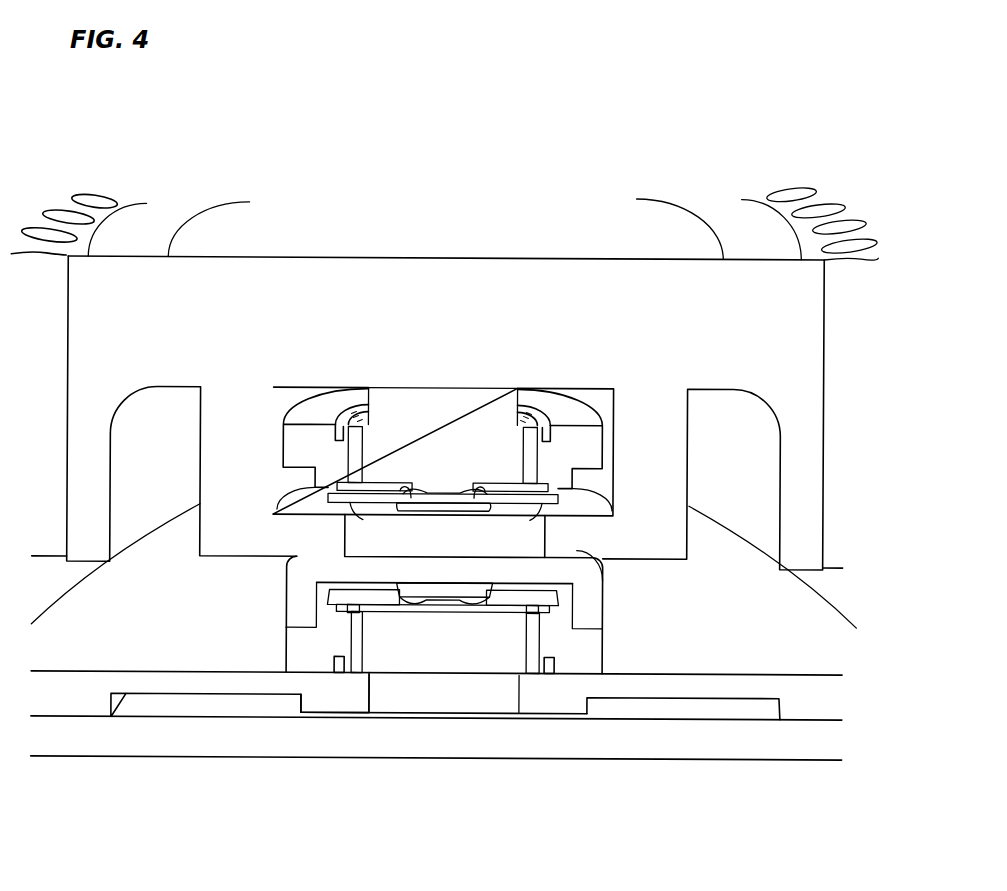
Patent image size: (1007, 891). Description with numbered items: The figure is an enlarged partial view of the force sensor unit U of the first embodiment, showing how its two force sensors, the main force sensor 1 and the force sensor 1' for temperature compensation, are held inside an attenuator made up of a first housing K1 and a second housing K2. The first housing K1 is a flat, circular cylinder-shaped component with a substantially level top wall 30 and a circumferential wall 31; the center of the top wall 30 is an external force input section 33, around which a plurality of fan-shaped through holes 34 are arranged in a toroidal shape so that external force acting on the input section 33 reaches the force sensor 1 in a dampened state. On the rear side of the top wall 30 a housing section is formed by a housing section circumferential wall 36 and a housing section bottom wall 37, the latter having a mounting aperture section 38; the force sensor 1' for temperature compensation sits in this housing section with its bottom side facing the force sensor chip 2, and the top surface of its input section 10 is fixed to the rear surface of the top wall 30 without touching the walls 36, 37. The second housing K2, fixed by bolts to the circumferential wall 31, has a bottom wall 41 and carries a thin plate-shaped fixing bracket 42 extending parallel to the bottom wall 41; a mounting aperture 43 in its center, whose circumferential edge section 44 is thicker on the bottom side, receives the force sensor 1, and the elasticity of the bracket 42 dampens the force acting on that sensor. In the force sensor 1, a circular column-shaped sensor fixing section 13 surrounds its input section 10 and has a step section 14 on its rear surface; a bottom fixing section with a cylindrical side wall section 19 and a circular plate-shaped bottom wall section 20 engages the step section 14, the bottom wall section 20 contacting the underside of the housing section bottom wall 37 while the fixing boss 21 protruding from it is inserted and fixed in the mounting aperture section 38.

The force sensor unit U is at (678, 121).
The first housing K1 is at (803, 398).
The second housing K2 is at (780, 747).
The external force input section 33 is at (295, 222).
The through holes 34 is at (794, 190).
The input section 10 is at (405, 400).
The top wall 30 is at (418, 275).
The force sensor for temperature compensation 1' is at (444, 293).
The fixing boss 21 is at (508, 530).
The housing section circumferential wall 36 is at (665, 478).
The housing section bottom wall 37 is at (603, 580).
The circumferential wall 31 is at (43, 545).
The bottom wall section 20 is at (323, 567).
The mounting aperture section 38 is at (347, 537).
The force sensor chip 2 is at (462, 507).
The step section 14 is at (300, 620).
The sensor fixing section 13 is at (312, 647).
The side wall section 19 is at (590, 598).
The force sensor 1 is at (646, 647).
The circumferential edge section 44 is at (332, 702).
The mounting aperture 43 is at (372, 687).
The bottom wall 41 is at (555, 748).
The fixing bracket 42 is at (665, 688).